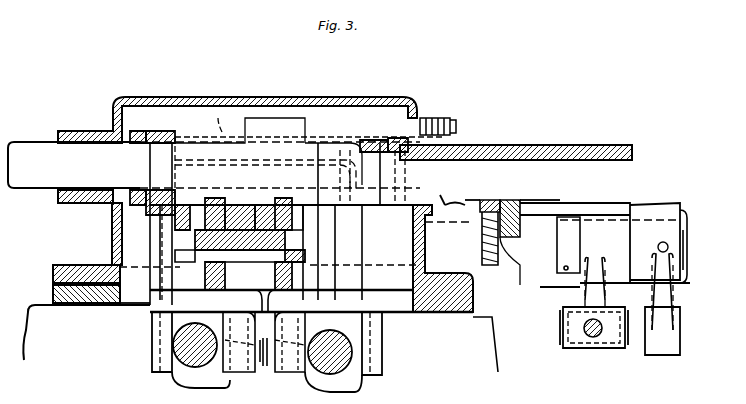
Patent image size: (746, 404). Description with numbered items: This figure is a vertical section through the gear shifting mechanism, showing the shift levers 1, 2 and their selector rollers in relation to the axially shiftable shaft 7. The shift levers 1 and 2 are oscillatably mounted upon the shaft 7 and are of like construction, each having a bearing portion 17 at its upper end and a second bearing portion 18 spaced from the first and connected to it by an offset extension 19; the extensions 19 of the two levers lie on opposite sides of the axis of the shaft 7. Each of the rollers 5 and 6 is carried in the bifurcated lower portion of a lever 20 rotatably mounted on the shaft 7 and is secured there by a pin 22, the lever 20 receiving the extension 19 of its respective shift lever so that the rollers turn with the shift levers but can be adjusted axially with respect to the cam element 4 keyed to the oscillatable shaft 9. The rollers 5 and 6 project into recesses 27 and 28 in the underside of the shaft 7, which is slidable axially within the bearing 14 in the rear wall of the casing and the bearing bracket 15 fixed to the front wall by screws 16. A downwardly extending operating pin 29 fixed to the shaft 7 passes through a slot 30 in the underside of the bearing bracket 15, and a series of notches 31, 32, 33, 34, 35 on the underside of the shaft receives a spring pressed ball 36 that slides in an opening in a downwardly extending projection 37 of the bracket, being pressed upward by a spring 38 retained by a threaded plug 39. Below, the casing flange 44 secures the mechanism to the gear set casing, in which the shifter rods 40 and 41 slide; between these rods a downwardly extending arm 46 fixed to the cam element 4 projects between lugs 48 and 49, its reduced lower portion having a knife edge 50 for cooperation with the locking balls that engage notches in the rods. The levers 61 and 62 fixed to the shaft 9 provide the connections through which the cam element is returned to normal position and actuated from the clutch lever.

The gear shifting lever 1 is at (152, 362).
The gear shifting lever 2 is at (380, 371).
The cam element 4 is at (368, 236).
The roller 5 is at (206, 292).
The roller 6 is at (296, 292).
The shaft 7 is at (30, 146).
The oscillatable shaft 9 is at (688, 252).
The bearing 14 is at (96, 128).
The bearing bracket 15 is at (528, 132).
The screws 16 is at (456, 126).
The bearing portion 17 is at (170, 136).
The bearing portion 18 is at (148, 136).
The offset extension 19 is at (338, 136).
The lever 20 is at (238, 132).
The pin 22 is at (160, 242).
The recess 27 is at (222, 198).
The recess 28 is at (282, 196).
The operating pin 29 is at (575, 230).
The slot 30 is at (622, 200).
The notch 31 is at (445, 203).
The notch 32 is at (466, 200).
The notch 33 is at (478, 198).
The notch 34 is at (504, 200).
The notch 35 is at (528, 200).
The spring pressed ball 36 is at (512, 226).
The projection 37 is at (524, 286).
The spring 38 is at (512, 250).
The threaded plug 39 is at (498, 290).
The shifter rod 40 is at (200, 362).
The shifter rod 41 is at (338, 370).
The projecting flange 44 is at (62, 258).
The arm 46 is at (254, 294).
The lug 48 is at (244, 374).
The lug 49 is at (280, 374).
The knife edge 50 is at (266, 370).
The lever 61 is at (606, 295).
The lever 62 is at (676, 295).